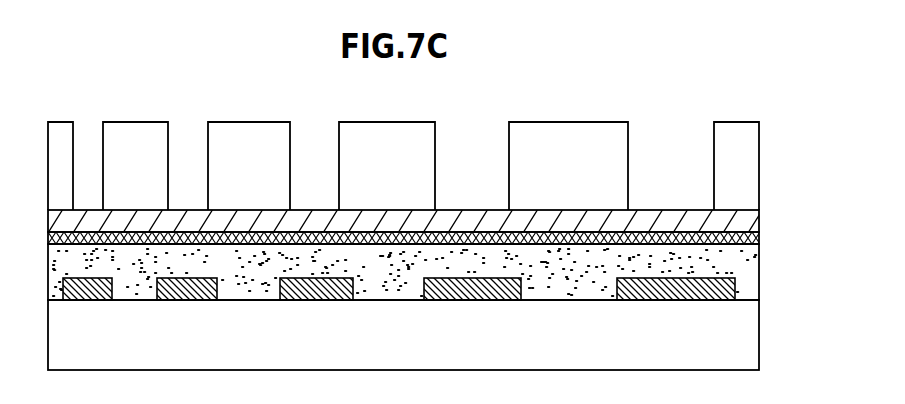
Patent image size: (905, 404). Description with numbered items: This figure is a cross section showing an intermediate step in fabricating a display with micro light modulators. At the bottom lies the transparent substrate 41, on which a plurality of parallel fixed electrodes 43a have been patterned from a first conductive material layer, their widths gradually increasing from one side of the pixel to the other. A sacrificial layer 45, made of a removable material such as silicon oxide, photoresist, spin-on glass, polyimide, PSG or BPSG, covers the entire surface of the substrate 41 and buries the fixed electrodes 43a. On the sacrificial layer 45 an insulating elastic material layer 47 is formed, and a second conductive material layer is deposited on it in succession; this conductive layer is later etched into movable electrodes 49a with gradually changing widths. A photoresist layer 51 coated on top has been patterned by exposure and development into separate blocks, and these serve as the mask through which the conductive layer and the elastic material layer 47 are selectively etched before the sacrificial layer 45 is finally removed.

The transparent substrate 41 is at (743, 333).
The fixed electrodes 43a is at (728, 290).
The sacrificial layer 45 is at (745, 263).
The insulating elastic material layer 47 is at (745, 236).
The movable electrodes 49a is at (743, 215).
The photoresist layer 51 is at (743, 168).